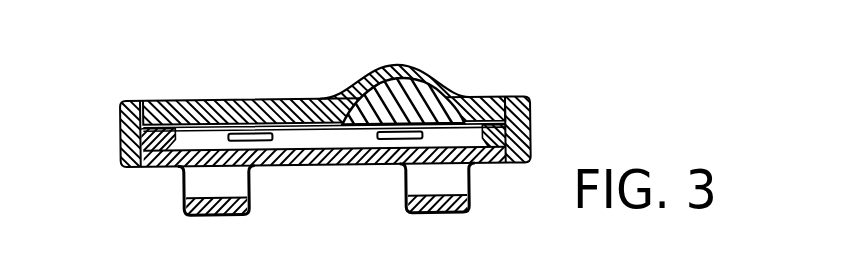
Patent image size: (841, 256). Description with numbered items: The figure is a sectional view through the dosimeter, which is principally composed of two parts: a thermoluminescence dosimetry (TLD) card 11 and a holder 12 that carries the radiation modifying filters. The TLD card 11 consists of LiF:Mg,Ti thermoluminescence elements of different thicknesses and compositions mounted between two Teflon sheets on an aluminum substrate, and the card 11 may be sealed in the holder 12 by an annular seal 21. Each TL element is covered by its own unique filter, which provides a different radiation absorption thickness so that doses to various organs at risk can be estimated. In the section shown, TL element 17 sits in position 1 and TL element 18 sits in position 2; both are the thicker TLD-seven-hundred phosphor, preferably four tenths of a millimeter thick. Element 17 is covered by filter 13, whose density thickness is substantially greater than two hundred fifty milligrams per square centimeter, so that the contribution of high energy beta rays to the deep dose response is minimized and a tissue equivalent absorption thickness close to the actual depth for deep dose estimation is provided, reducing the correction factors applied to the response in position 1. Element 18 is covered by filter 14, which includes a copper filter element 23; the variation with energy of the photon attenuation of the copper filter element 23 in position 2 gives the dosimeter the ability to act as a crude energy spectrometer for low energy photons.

The position 1 is at (403, 80).
The position 2 is at (325, 104).
The thermoluminescence dosimetry card 11 is at (311, 150).
The holder 12 is at (120, 133).
The filter 13 is at (436, 71).
The filter 14 is at (207, 98).
The thermoluminescence element 17 is at (393, 143).
The thermoluminescence element 18 is at (266, 142).
The annular seal 21 is at (492, 150).
The copper filter element 23 is at (286, 127).